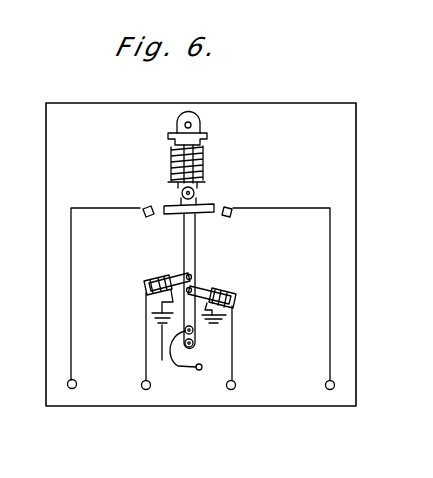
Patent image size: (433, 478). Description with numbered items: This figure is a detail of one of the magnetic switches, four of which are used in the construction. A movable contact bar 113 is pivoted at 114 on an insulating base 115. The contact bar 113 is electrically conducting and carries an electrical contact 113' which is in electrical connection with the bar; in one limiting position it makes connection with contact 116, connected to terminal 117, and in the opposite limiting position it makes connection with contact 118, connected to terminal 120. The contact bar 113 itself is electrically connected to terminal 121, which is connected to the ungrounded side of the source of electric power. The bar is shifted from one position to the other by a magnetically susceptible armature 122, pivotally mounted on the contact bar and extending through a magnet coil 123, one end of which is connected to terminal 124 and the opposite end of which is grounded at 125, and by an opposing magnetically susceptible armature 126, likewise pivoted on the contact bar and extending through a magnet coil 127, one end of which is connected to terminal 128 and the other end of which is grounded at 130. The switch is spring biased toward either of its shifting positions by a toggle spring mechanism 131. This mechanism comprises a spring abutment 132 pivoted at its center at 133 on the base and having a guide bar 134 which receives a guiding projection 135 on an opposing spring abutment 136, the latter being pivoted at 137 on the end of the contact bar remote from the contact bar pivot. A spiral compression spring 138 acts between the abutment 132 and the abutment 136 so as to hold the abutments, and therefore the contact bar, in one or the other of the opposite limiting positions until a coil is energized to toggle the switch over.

The movable contact bar 113 is at (164, 281).
The electrical contact 113' is at (169, 221).
The pivot 114 is at (193, 346).
The insulating base 115 is at (347, 289).
The contact 116 is at (142, 209).
The terminal 117 is at (72, 389).
The contact 118 is at (231, 209).
The terminal 120 is at (330, 390).
The terminal 121 is at (200, 370).
The magnetically susceptible armature 122 is at (148, 288).
The magnet coil 123 is at (184, 277).
The terminal 124 is at (142, 382).
The ground connection 125 is at (174, 351).
The opposing magnetically susceptible armature 126 is at (236, 301).
The magnet coil 127 is at (220, 288).
The terminal 128 is at (236, 385).
The ground connection 130 is at (226, 315).
The toggle spring mechanism 131 is at (203, 146).
The spring abutment 132 is at (180, 116).
The pivot 133 is at (200, 119).
The guide bar 134 is at (176, 147).
The guiding projection 135 is at (203, 163).
The opposing spring abutment 136 is at (180, 191).
The pivot 137 is at (196, 191).
The spiral compression spring 138 is at (171, 156).